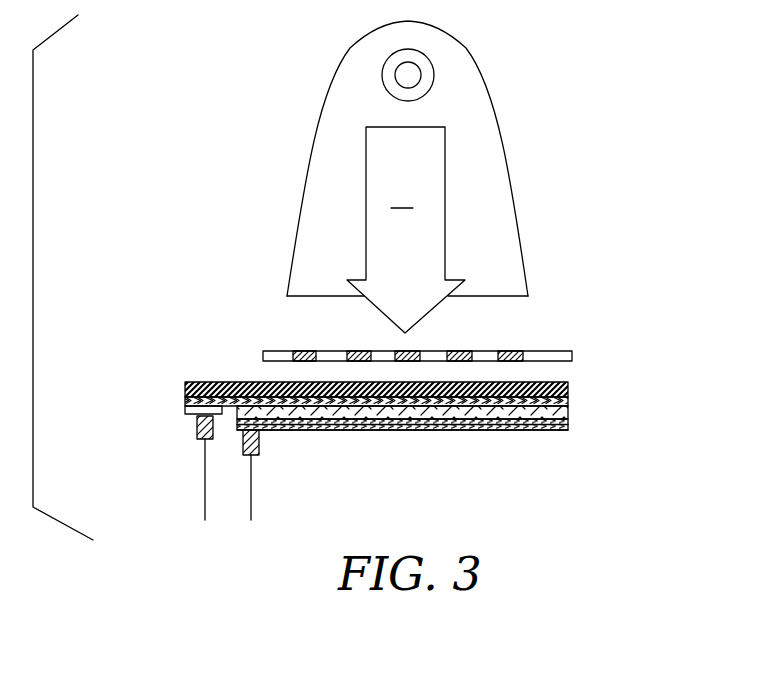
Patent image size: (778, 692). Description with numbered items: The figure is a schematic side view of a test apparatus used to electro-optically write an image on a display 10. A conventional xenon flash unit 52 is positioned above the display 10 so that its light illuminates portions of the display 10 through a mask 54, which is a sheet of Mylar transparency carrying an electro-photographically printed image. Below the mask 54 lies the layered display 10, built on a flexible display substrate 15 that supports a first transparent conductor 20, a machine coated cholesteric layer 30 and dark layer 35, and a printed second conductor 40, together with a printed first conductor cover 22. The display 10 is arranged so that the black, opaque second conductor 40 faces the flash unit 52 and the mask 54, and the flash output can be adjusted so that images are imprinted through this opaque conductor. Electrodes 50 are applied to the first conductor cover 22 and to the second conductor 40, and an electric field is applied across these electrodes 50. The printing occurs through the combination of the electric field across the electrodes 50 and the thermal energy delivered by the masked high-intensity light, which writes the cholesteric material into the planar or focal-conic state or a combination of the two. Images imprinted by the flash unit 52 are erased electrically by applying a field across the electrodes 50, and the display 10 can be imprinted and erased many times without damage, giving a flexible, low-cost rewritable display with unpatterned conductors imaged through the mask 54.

The display 10 is at (170, 324).
The display substrate 15 is at (568, 385).
The first transparent conductor 20 is at (568, 400).
The first conductor cover 22 is at (185, 409).
The cholesteric layer 30 is at (568, 412).
The dark layer 35 is at (568, 422).
The second conductor 40 is at (568, 426).
The electrodes 50 is at (197, 434).
The flash unit 52 is at (465, 52).
The mask 54 is at (572, 352).